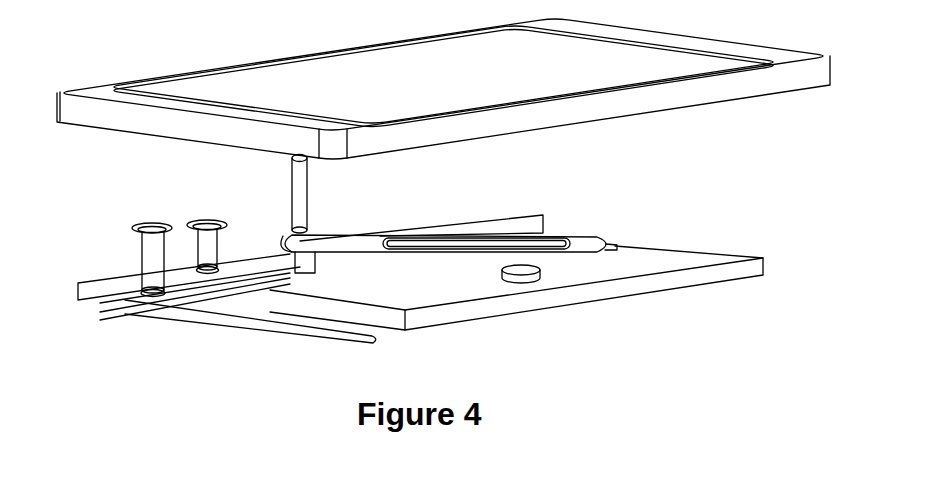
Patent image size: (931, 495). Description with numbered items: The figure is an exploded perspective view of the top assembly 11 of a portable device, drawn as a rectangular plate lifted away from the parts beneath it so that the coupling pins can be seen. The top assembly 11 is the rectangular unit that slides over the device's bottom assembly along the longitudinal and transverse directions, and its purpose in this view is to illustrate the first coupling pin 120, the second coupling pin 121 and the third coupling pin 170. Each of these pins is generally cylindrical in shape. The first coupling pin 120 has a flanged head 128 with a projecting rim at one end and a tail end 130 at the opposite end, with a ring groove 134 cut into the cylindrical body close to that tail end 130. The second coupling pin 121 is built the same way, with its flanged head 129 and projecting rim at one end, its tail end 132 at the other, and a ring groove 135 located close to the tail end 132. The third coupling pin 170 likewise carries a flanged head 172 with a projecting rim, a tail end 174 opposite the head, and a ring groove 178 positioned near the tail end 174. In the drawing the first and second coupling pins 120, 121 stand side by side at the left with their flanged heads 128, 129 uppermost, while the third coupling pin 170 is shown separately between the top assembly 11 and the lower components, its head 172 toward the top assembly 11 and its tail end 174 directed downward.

The top assembly 11 is at (753, 97).
The first coupling pin 120 is at (126, 226).
The second coupling pin 121 is at (213, 209).
The flanged head 128 is at (150, 222).
The flanged head 129 is at (203, 220).
The tail end 130 is at (152, 298).
The tail end 132 is at (207, 272).
The ring groove 134 is at (142, 288).
The ring groove 135 is at (198, 265).
The third coupling pin 170 is at (312, 194).
The flanged head 172 is at (292, 160).
The tail end 174 is at (302, 233).
The ring groove 178 is at (303, 228).